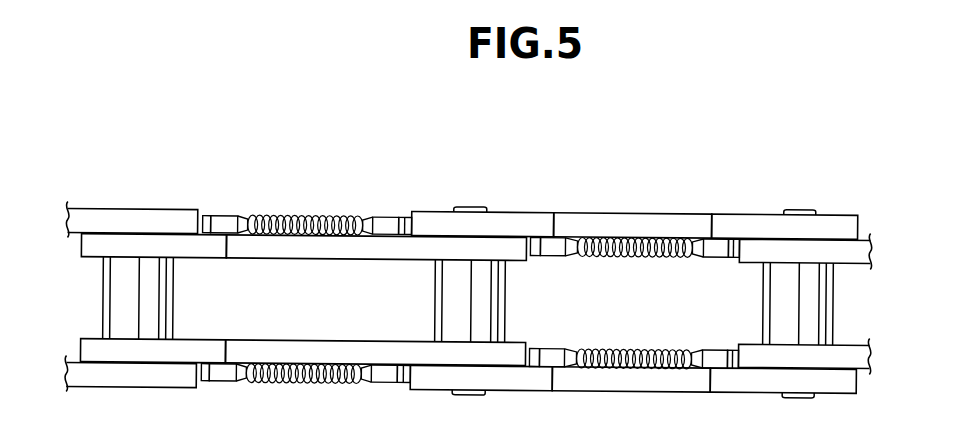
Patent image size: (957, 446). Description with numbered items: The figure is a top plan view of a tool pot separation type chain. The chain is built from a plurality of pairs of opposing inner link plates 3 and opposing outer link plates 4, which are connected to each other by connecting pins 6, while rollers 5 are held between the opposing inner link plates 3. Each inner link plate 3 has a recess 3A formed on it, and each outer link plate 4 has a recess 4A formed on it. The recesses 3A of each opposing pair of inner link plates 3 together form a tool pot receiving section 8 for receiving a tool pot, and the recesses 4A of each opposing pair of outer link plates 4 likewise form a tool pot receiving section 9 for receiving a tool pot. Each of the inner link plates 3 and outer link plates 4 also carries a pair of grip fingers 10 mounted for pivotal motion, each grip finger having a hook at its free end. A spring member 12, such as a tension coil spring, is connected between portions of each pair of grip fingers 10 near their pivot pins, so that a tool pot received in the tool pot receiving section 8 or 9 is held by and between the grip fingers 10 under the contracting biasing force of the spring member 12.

The inner link plate 3 is at (417, 352).
The recess 3A is at (297, 248).
The outer link plate 4 is at (759, 378).
The recess 4A is at (633, 225).
The roller 5 is at (478, 325).
The connecting pin 6 is at (468, 205).
The tool pot receiving section 8 is at (298, 307).
The tool pot receiving section 9 is at (631, 313).
The grip finger 10 is at (223, 375).
The spring member 12 is at (350, 380).